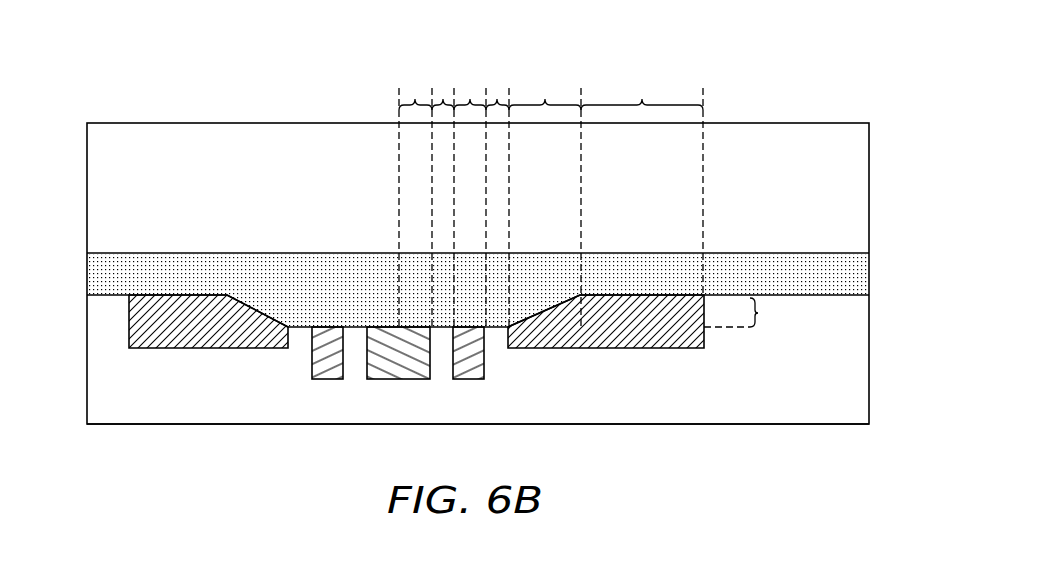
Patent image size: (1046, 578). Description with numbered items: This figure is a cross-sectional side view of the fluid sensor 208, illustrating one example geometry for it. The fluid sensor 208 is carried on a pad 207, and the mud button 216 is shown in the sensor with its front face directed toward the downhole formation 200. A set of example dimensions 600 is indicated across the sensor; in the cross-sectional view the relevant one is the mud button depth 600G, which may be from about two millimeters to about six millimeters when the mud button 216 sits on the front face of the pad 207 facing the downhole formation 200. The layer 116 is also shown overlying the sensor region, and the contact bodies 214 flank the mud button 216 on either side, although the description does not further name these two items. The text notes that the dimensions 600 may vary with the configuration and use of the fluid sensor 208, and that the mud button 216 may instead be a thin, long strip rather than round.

The first layer 116 is at (240, 171).
The downhole formation 200 is at (775, 123).
The pad 207 is at (736, 407).
The fluid sensor 208 is at (421, 280).
The source/drain contact structures 214 is at (197, 348).
The mud button 216 is at (397, 380).
The dimension 600 is at (395, 65).
The mud button depth 600G is at (758, 314).